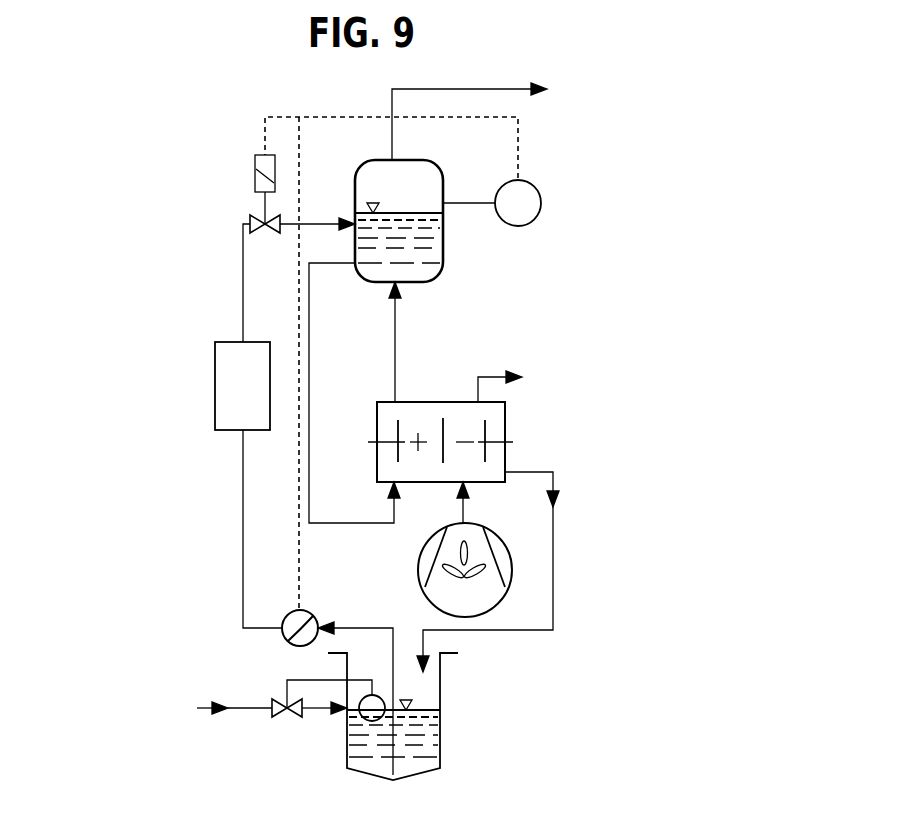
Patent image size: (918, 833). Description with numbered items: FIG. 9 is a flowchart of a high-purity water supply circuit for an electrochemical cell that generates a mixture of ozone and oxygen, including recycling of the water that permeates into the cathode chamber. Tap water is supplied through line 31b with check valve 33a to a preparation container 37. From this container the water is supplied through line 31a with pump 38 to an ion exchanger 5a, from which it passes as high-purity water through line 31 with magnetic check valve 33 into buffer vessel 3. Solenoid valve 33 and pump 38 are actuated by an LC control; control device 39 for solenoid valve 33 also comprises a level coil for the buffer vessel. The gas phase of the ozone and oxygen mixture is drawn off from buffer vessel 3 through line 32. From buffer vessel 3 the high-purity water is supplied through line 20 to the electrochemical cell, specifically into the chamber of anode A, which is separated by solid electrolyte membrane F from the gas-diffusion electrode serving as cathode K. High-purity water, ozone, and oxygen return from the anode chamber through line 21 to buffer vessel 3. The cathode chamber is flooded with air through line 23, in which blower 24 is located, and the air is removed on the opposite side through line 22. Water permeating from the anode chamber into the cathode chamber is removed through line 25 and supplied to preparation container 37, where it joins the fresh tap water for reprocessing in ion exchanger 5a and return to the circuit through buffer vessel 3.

The buffer vessel 3 is at (448, 243).
The line 32 is at (390, 97).
The control device 39 is at (541, 204).
The magnetic check valve 33 is at (253, 180).
The line 31 is at (243, 307).
The ion exchanger 5a is at (215, 377).
The line 31a is at (243, 535).
The pump 38 is at (290, 641).
The line 31b is at (243, 712).
The check valve 33a is at (292, 718).
The preparation container 37 is at (442, 725).
The anode A is at (394, 450).
The cathode K is at (490, 455).
The solid electrolyte membrane F is at (443, 418).
The line 21 is at (393, 333).
The line 22 is at (481, 387).
The line 20 is at (343, 523).
The line 23 is at (462, 508).
The blower 24 is at (488, 560).
The line 25 is at (556, 612).